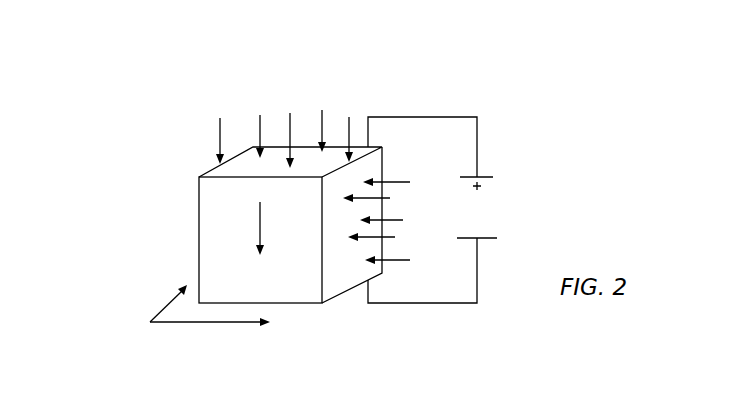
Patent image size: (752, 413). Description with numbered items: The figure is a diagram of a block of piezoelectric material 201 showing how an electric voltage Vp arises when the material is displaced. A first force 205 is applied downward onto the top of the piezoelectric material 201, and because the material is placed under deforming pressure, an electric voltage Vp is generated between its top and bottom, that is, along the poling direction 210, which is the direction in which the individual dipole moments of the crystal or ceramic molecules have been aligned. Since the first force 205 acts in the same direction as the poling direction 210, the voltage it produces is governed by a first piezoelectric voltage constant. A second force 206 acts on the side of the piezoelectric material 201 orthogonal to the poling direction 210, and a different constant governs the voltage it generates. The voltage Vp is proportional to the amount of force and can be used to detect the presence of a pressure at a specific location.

The piezoelectric material 201 is at (190, 247).
The force F1 205 is at (264, 90).
The force F2 206 is at (422, 189).
The poling direction P1 210 is at (246, 222).